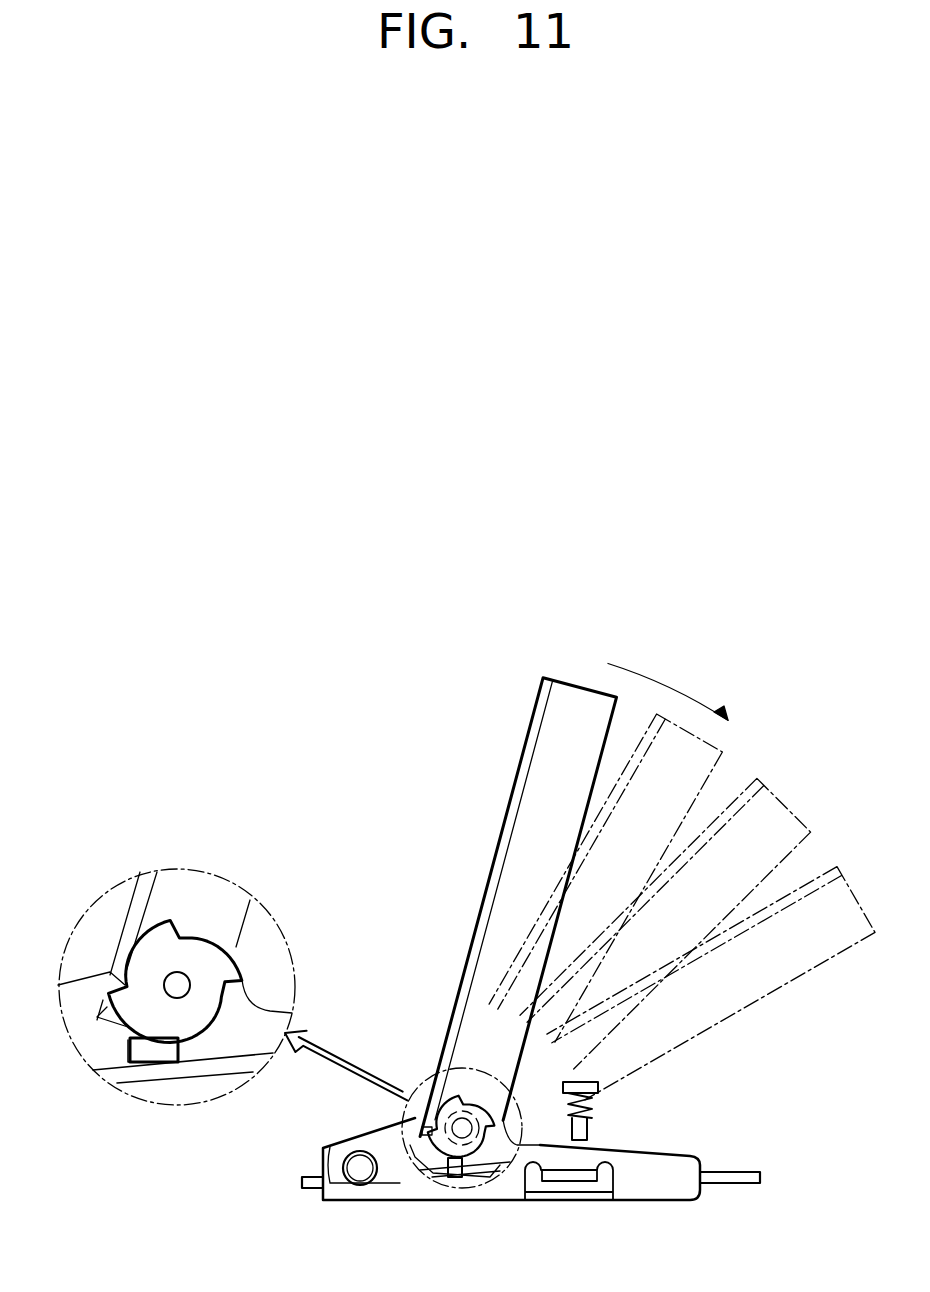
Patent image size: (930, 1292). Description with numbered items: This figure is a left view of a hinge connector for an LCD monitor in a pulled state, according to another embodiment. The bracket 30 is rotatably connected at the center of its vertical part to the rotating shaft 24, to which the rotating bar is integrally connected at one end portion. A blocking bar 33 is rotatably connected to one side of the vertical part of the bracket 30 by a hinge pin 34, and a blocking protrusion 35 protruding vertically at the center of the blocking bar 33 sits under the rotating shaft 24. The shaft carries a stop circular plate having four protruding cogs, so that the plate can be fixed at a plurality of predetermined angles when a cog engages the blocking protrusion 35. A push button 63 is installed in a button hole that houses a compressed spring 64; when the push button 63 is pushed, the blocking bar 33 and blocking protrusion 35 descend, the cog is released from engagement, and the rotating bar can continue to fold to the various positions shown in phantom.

The rotating shaft 24 is at (178, 983).
The bracket 30 is at (412, 1188).
The blocking bar 33 is at (153, 1072).
The hinge pin 34 is at (357, 1183).
The blocking protrusion 35 is at (140, 1053).
The push button 63 is at (600, 1087).
The compressed spring 64 is at (590, 1107).